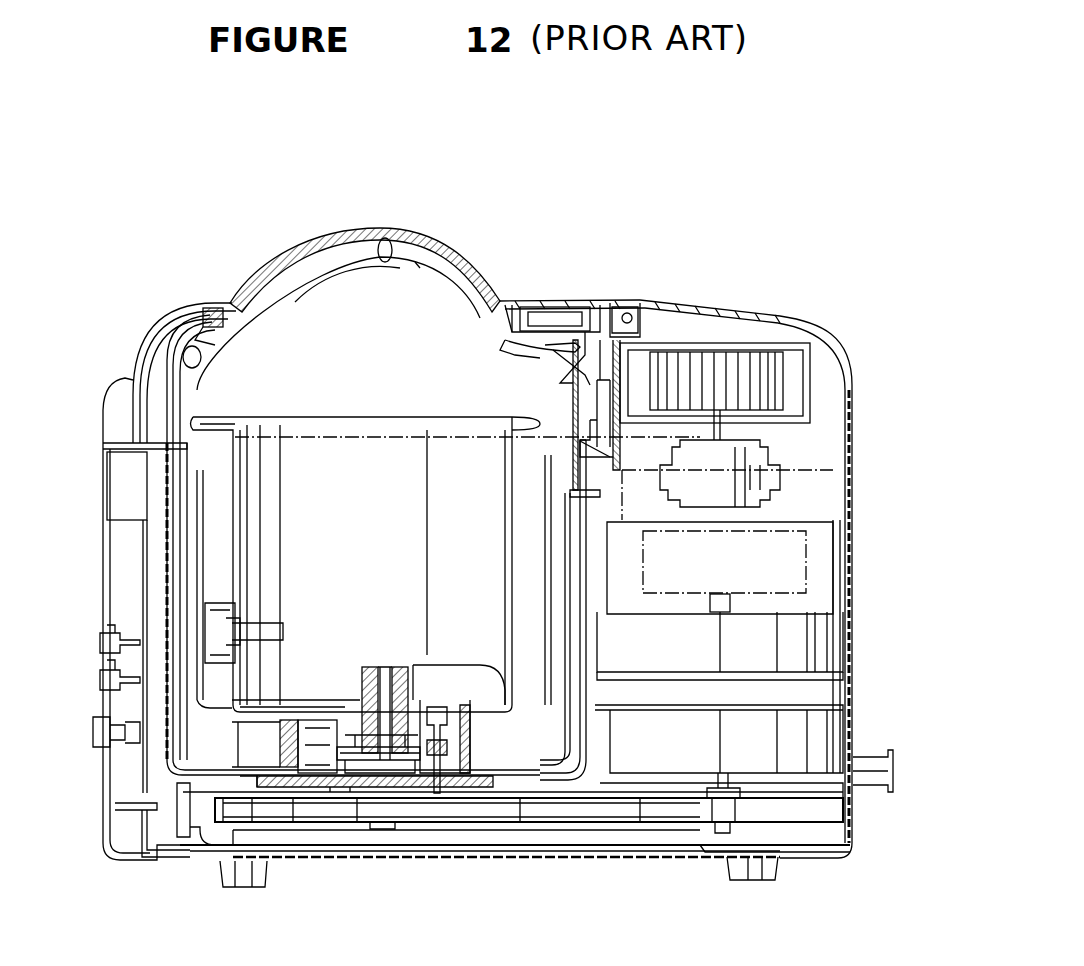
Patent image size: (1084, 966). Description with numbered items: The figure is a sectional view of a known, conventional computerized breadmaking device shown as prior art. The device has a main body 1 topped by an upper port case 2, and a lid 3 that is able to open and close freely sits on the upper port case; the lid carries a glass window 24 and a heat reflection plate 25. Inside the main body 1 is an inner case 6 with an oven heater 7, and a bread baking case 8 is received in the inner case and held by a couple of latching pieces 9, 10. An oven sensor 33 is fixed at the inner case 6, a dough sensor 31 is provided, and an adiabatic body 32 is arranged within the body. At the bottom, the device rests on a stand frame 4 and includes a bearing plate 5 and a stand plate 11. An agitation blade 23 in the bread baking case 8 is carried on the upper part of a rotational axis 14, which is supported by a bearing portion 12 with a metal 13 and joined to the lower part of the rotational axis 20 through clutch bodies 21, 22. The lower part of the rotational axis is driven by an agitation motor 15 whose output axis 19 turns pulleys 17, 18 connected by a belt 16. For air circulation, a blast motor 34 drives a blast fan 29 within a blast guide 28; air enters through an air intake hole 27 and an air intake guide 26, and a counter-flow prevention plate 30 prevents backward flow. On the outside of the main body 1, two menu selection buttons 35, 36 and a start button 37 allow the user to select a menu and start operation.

The main body 1 is at (858, 582).
The upper port case 2 is at (745, 313).
The lid 3 is at (556, 304).
The stand frame 4 is at (173, 810).
The bearing plate 5 is at (472, 728).
The inner case 6 is at (578, 580).
The oven heater 7 is at (200, 690).
The bread baking case 8 is at (515, 540).
The latching piece 9 is at (285, 758).
The latching piece 10 is at (310, 798).
The stand plate 11 is at (325, 753).
The bearing portion 12 is at (365, 720).
The metal 13 is at (355, 680).
The upper part of rotational axis 14 is at (375, 666).
The agitation motor 15 is at (823, 625).
The belt 16 is at (567, 808).
The pulley 17 is at (712, 815).
The pulley 18 is at (508, 823).
The output axis of the agitation motor 19 is at (758, 858).
The lower part of rotational axis 20 is at (380, 830).
The clutch body 21 is at (345, 710).
The clutch body 22 is at (347, 798).
The agitation blade 23 is at (485, 673).
The glass window 24 is at (390, 250).
The heat reflection plate 25 is at (188, 360).
The air intake guide 26 is at (583, 400).
The air intake hole 27 is at (520, 360).
The blast guide 28 is at (668, 345).
The blast fan 29 is at (785, 385).
The counter-flow prevention plate 30 is at (583, 362).
The dough sensor 31 is at (378, 691).
The adiabatic body 32 is at (565, 590).
The oven sensor 33 is at (572, 548).
The blast motor 34 is at (765, 490).
The menu selection button 35 is at (105, 642).
The menu selection button 36 is at (105, 685).
The start button 37 is at (95, 732).